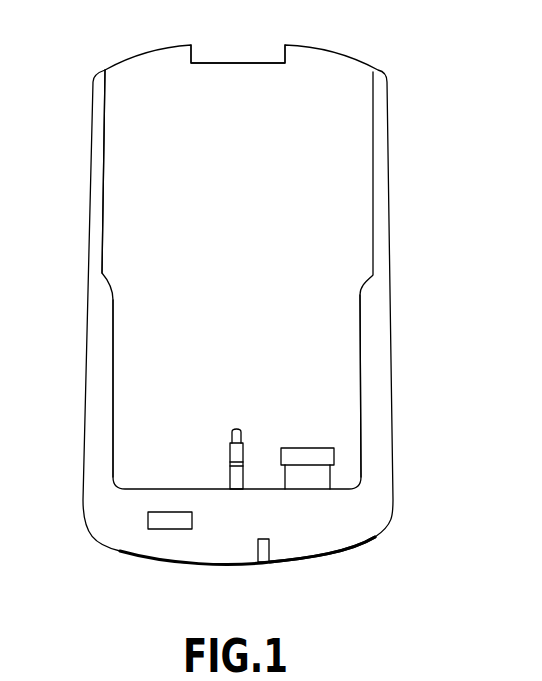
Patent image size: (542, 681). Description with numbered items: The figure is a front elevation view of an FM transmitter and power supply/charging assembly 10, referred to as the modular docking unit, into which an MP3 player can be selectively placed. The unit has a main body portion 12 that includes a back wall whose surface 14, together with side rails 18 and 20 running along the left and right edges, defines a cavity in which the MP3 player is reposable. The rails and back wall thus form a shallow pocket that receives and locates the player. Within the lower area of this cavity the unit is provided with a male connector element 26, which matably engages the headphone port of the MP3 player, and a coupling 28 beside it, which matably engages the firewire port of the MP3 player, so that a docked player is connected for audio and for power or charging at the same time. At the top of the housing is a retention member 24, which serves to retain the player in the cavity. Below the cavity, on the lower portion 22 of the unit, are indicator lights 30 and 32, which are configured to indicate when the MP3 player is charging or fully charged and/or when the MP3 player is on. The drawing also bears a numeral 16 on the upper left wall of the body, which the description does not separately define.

The FM transmitter and power supply/charging assembly 10 is at (428, 80).
The main body portion 12 is at (390, 392).
The back wall surface 14 is at (255, 280).
The upper side wall 16 is at (113, 173).
The side rail 18 is at (100, 347).
The side rail 20 is at (382, 332).
The lower portion 22 is at (335, 548).
The retention member 24 is at (283, 55).
The male connector element 26 is at (224, 455).
The coupling 28 is at (308, 452).
The indicator light 30 is at (168, 523).
The indicator light 32 is at (256, 548).